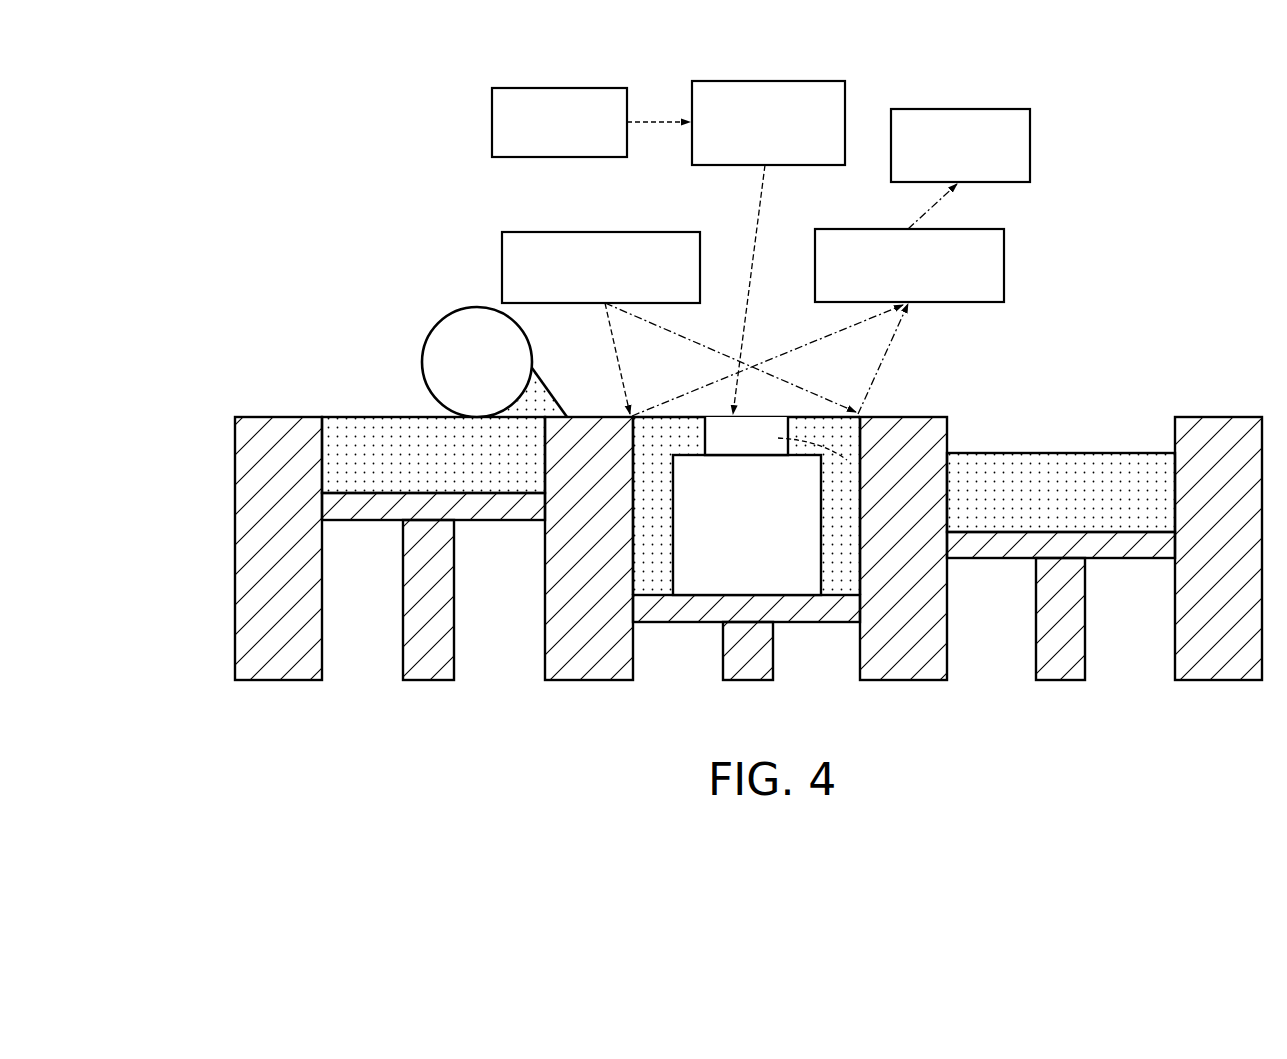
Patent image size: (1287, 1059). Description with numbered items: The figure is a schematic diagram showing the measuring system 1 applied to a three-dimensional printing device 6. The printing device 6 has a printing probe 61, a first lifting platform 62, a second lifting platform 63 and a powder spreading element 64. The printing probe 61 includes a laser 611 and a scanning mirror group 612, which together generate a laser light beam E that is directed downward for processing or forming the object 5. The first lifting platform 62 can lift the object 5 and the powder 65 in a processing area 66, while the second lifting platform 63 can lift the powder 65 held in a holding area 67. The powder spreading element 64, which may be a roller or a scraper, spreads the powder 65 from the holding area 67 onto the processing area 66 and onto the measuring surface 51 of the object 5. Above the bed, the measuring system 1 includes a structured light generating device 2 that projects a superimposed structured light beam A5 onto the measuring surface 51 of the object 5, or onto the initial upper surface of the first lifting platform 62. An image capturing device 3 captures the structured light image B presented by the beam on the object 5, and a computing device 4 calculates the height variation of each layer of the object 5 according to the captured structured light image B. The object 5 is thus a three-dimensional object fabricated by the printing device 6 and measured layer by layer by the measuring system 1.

The measuring system 1 is at (877, 85).
The structured light generating device 2 is at (590, 232).
The image capturing device 3 is at (1004, 265).
The computing device 4 is at (1030, 143).
The object 5 is at (808, 507).
The measuring surface 51 is at (750, 417).
The 3D printing device 6 is at (282, 297).
The 3D printing probe 61 is at (652, 90).
The laser 611 is at (492, 122).
The scanning mirror group 612 is at (757, 81).
The first lifting platform 62 is at (723, 645).
The second lifting platform 63 is at (373, 522).
The powder spreading element 64 is at (426, 338).
The powder 65 is at (650, 470).
The processing area 66 is at (562, 444).
The holding area 67 is at (373, 415).
The superimposed structured light beam A5 is at (613, 344).
The structured light image B is at (930, 209).
The laser light beam E is at (753, 253).